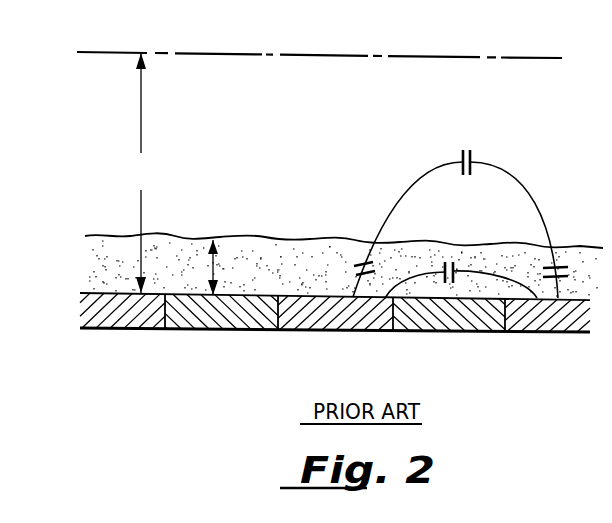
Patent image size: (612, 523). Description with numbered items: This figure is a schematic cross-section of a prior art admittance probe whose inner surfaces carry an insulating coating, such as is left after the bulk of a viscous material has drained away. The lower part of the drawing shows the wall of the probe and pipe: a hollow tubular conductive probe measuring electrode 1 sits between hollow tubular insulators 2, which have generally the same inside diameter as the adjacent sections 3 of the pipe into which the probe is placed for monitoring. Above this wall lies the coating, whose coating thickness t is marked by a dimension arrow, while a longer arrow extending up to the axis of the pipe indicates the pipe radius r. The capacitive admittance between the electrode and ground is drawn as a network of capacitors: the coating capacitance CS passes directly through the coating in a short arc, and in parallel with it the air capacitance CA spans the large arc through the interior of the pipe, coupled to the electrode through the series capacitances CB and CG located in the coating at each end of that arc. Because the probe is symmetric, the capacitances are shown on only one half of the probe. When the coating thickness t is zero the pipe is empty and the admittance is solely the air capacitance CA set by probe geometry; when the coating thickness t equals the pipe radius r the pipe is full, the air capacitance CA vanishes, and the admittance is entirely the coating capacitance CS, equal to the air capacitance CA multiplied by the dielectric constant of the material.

The probe measuring electrode 1 is at (355, 320).
The hollow tubular insulators 2 is at (245, 318).
The adjacent sections of the pipe 3 is at (140, 318).
The pipe radius r is at (140, 173).
The coating thickness t is at (212, 268).
The air capacitance CA is at (473, 154).
The series capacitance CB is at (354, 270).
The coating capacitance CS is at (442, 270).
The series capacitance CG is at (566, 279).